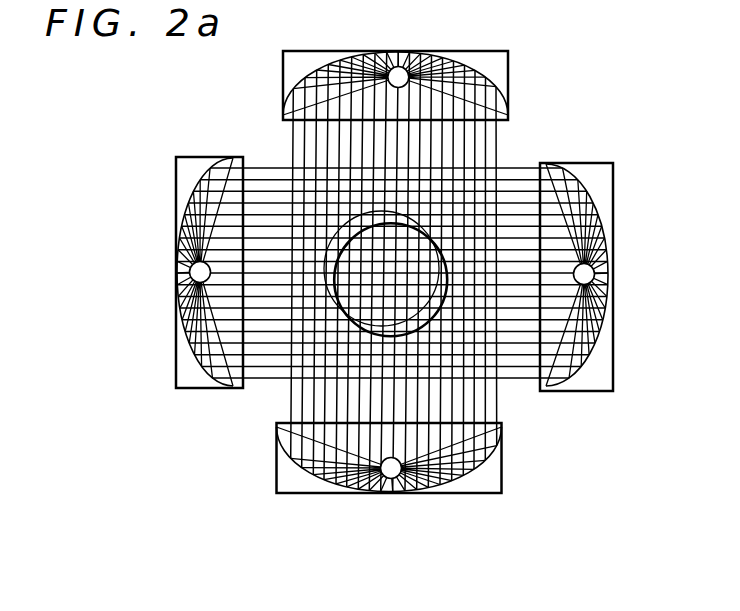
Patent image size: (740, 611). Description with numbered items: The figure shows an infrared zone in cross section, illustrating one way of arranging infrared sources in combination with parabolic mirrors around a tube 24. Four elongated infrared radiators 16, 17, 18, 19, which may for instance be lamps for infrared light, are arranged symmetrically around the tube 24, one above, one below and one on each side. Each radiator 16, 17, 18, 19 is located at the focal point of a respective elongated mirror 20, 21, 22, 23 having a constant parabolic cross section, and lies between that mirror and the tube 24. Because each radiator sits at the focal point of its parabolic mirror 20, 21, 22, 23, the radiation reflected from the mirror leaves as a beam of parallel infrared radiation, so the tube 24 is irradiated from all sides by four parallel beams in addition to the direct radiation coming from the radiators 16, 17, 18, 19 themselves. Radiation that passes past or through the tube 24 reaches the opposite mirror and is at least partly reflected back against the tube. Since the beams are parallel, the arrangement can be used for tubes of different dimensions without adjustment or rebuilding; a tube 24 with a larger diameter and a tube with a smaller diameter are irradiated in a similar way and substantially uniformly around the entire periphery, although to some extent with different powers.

The infrared radiator 16 is at (397, 67).
The infrared radiator 17 is at (189, 273).
The infrared radiator 18 is at (392, 479).
The infrared radiator 19 is at (595, 276).
The mirror 20 is at (603, 204).
The mirror 21 is at (330, 64).
The mirror 22 is at (199, 196).
The mirror 23 is at (312, 477).
The tube 24 is at (415, 222).